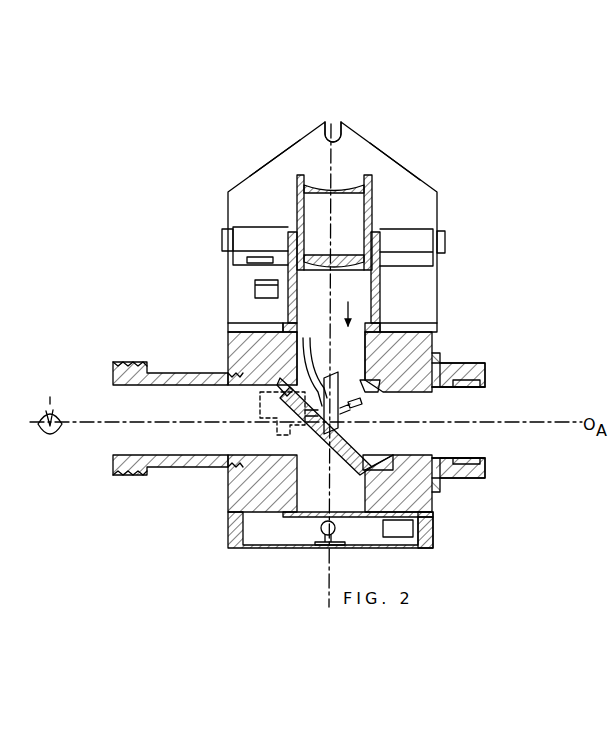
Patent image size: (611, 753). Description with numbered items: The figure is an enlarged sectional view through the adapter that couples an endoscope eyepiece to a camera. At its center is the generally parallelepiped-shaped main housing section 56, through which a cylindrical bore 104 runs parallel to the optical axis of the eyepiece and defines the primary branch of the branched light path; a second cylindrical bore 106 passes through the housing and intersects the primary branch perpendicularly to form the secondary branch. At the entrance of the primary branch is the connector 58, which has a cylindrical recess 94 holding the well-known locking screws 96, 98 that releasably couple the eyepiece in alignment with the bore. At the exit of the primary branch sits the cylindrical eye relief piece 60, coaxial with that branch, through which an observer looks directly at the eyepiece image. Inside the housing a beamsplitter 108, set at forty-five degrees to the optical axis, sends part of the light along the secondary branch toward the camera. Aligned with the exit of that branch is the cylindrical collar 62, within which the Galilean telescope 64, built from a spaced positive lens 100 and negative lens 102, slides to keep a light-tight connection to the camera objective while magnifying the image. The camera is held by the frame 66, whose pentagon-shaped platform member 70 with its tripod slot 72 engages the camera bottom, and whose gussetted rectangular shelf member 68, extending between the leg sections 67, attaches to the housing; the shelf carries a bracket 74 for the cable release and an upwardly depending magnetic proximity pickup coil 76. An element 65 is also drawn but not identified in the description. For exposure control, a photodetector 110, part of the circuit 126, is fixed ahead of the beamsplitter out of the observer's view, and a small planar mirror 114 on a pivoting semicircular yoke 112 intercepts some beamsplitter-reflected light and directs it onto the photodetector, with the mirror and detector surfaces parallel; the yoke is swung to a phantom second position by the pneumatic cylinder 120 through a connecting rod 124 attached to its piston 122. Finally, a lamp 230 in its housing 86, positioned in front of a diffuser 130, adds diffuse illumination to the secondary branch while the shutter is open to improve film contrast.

The main housing section 56 is at (394, 332).
The connector 58 is at (455, 364).
The eye relief piece 60 is at (196, 372).
The collar 62 is at (381, 283).
The Galilean telescope 64 is at (373, 208).
The support bracket 65 is at (418, 229).
The frame 66 is at (388, 155).
The leg sections 67 is at (222, 238).
The shelf member 68 is at (438, 291).
The platform member 70 is at (300, 155).
The slot 72 is at (336, 122).
The bracket 74 is at (262, 298).
The magnetic proximity pickup coil 76 is at (247, 261).
The housing 86 is at (278, 548).
The cylindrical recess 94 is at (480, 385).
The locking screw 96 is at (458, 400).
The locking screw 98 is at (465, 456).
The positive lens 100 is at (336, 255).
The negative lens 102 is at (338, 188).
The cylindrical bore 104 is at (432, 355).
The second cylindrical bore 106 is at (347, 305).
The beamsplitter 108 is at (345, 462).
The photodetector 110 is at (388, 454).
The yoke 112 is at (319, 372).
The planar mirror 114 is at (340, 385).
The pneumatic cylinder 120 is at (260, 403).
The piston 122 is at (312, 420).
The connecting rod 124 is at (331, 358).
The circuit 126 is at (433, 532).
The diffuser 130 is at (322, 512).
The lamp 230 is at (335, 529).